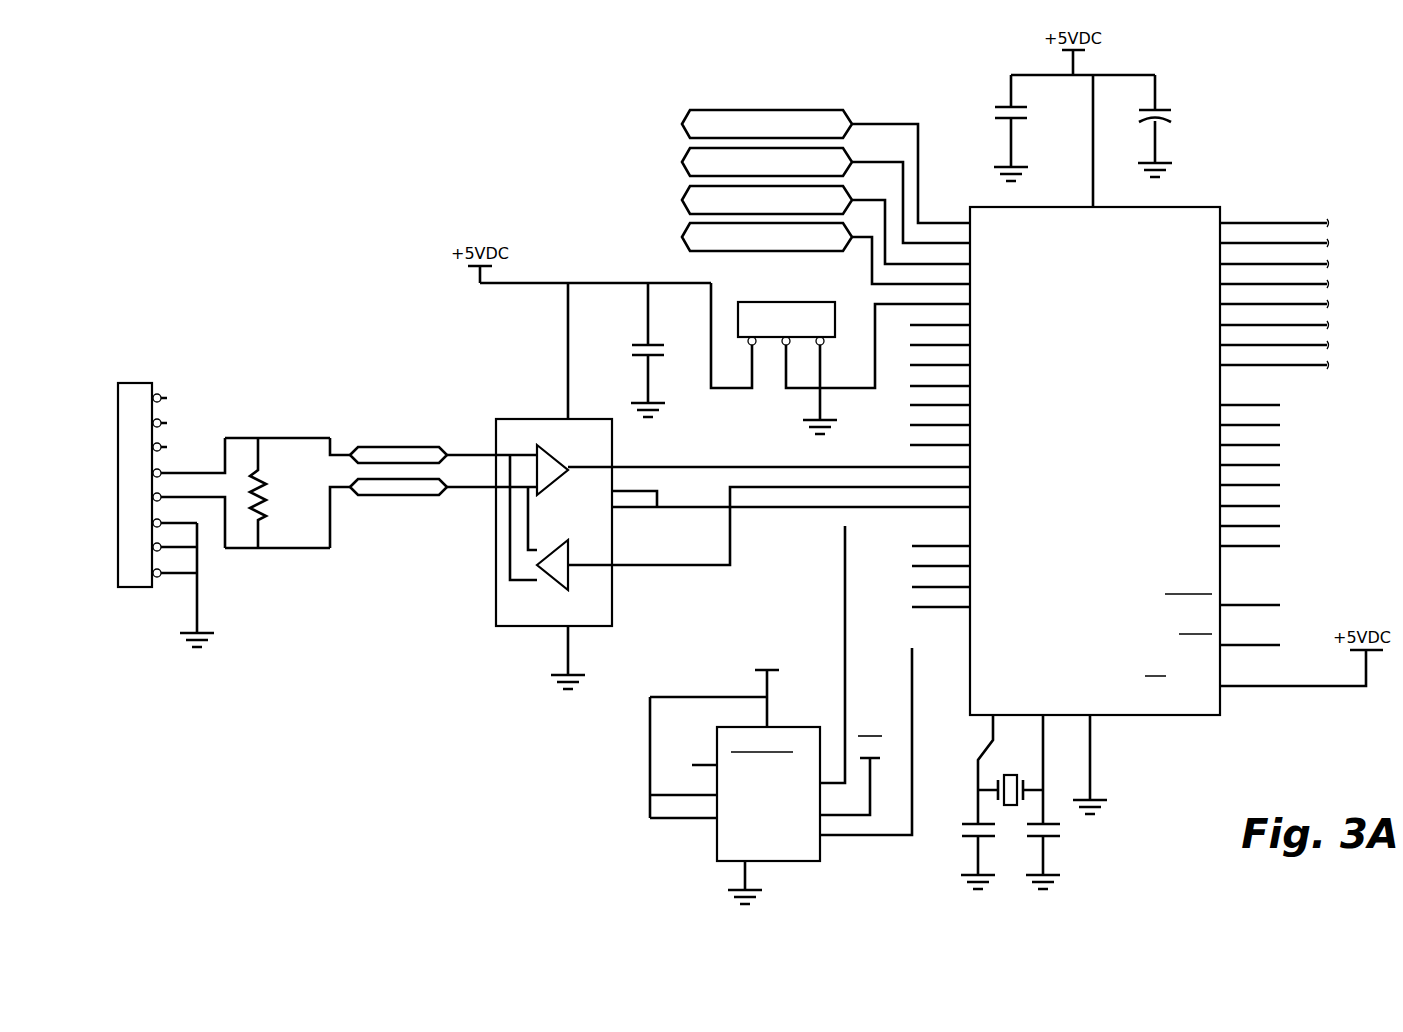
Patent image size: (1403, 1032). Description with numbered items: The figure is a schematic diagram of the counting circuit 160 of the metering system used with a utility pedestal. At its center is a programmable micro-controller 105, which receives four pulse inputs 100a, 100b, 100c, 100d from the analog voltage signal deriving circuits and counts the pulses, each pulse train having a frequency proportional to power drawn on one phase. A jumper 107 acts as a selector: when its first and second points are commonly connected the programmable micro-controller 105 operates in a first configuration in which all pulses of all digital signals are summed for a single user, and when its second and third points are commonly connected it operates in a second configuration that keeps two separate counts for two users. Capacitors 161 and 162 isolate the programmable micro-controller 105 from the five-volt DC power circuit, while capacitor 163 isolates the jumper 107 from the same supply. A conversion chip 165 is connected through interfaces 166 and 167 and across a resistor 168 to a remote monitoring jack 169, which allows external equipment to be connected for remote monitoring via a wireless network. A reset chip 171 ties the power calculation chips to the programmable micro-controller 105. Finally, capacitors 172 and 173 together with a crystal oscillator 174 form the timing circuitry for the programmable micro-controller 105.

The programmable micro-controller 105 is at (970, 207).
The counting circuit 160 is at (694, 87).
The input from signal deriving circuit 100a is at (682, 124).
The input from signal deriving circuit 100b is at (682, 162).
The input from signal deriving circuit 100c is at (682, 200).
The input from signal deriving circuit 100d is at (682, 237).
The capacitor 161 is at (1000, 107).
The capacitor 162 is at (1170, 110).
The jumper 107 is at (792, 302).
The capacitor 163 is at (634, 345).
The conversion chip 165 is at (520, 419).
The interface 166 is at (397, 446).
The interface 167 is at (400, 497).
The resistor 168 is at (264, 480).
The remote monitoring jack 169 is at (145, 383).
The reset chip 171 is at (717, 852).
The capacitor 172 is at (970, 838).
The capacitor 173 is at (1056, 840).
The crystal oscillator 174 is at (1003, 782).